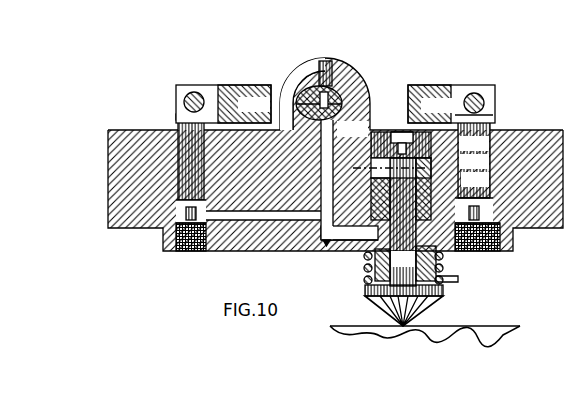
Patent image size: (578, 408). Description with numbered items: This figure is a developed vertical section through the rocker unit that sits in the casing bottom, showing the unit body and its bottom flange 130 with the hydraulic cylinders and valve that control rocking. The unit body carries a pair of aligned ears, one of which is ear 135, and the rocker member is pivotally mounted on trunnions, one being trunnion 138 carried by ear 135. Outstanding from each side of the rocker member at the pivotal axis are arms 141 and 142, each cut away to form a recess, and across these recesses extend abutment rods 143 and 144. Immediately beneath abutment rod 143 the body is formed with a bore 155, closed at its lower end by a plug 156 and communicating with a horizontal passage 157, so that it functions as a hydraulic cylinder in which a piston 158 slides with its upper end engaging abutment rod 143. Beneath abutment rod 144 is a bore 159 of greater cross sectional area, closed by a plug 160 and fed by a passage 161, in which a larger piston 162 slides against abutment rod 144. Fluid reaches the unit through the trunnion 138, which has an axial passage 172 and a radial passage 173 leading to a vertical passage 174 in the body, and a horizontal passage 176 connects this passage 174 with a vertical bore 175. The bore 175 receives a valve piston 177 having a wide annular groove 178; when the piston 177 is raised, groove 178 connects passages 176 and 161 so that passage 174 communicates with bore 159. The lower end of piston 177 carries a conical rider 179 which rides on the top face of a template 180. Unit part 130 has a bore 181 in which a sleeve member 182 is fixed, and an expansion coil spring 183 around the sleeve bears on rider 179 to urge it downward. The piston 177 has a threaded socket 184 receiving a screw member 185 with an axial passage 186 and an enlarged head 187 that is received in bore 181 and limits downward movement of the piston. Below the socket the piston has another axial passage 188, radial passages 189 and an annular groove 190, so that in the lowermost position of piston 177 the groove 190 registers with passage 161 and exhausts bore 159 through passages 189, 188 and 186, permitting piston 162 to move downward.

The bottom flange 130 is at (252, 244).
The ear 135 is at (326, 58).
The trunnion 138 is at (302, 80).
The arm 141 is at (197, 78).
The arm 142 is at (456, 78).
The abutment rod 143 is at (178, 92).
The abutment rod 144 is at (476, 93).
The bore 155 is at (172, 200).
The plug 156 is at (182, 244).
The horizontal passage 157 is at (272, 212).
The piston 158 is at (170, 113).
The bore 159 is at (485, 200).
The plug 160 is at (492, 243).
The passage 161 is at (476, 184).
The piston 162 is at (485, 117).
The axial passage 172 is at (245, 104).
The radial passage 173 is at (354, 130).
The vertical passage 174 is at (313, 141).
The vertical bore 175 is at (374, 214).
The horizontal passage 176 is at (316, 240).
The piston 177 is at (370, 290).
The annular groove 178 is at (434, 250).
The rider 179 is at (408, 298).
The template 180 is at (490, 318).
The bore 181 is at (376, 132).
The sleeve member 182 is at (356, 266).
The expansion coil spring 183 is at (436, 274).
The threaded socket 184 is at (383, 170).
The screw member 185 is at (477, 169).
The axial passage 186 is at (431, 104).
The enlarged head 187 is at (384, 124).
The axial passage 188 is at (405, 222).
The radial passages 189 is at (475, 162).
The annular groove 190 is at (372, 179).